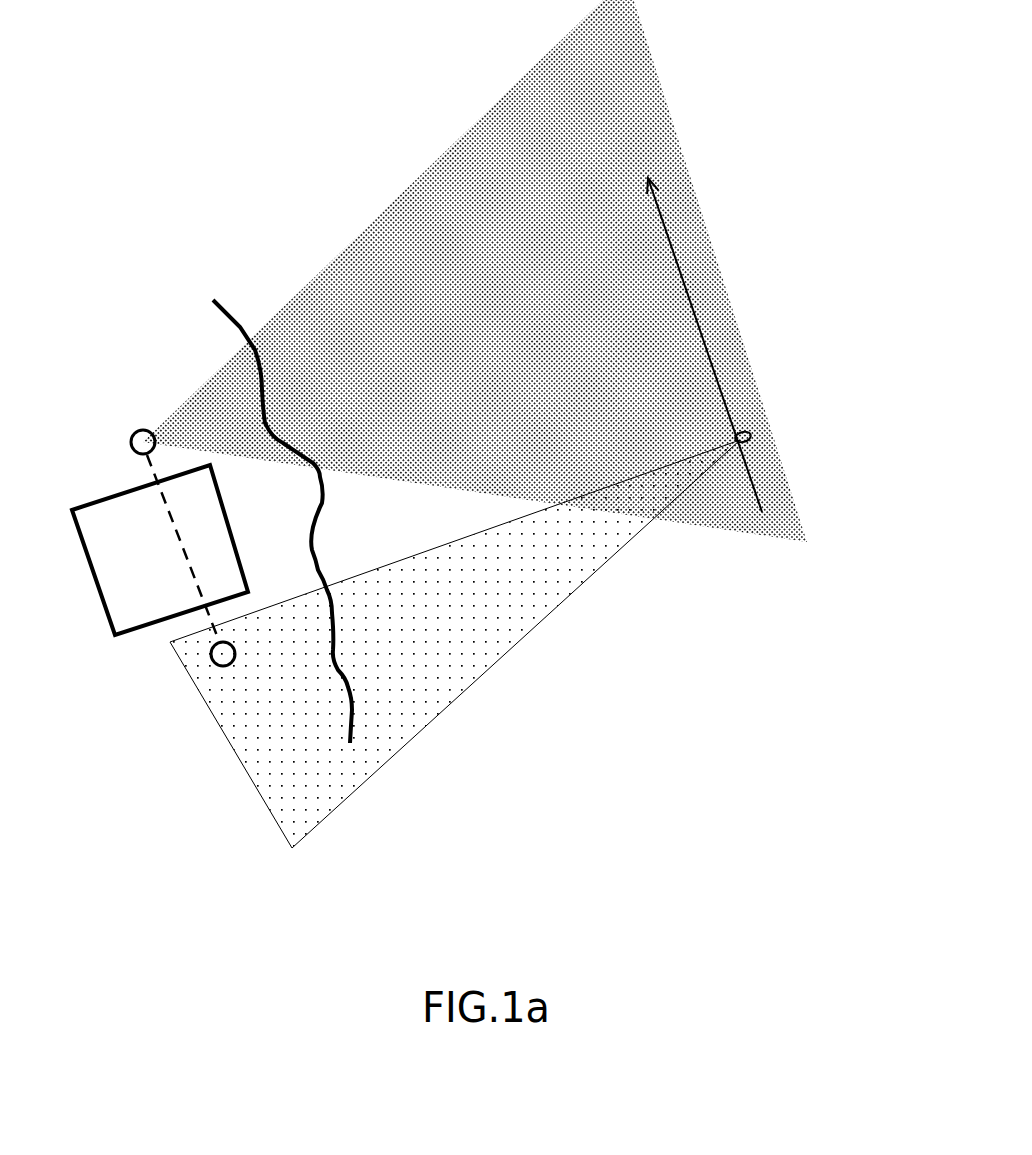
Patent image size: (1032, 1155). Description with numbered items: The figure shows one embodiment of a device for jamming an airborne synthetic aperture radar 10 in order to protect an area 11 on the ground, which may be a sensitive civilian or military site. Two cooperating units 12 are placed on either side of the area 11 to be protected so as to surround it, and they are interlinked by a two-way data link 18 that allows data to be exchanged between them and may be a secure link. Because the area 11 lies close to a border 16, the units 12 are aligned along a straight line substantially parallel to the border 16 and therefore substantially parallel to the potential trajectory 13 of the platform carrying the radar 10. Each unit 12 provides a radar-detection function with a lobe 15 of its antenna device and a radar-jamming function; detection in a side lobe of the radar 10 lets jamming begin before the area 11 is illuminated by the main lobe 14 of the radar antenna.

The airborne radar 10 is at (755, 433).
The area to be protected 11 is at (85, 552).
The cooperating unit 12 is at (130, 443).
The approach trajectory 13 is at (677, 268).
The main lobe 14 is at (512, 645).
The lobe of the antenna device 15 is at (408, 192).
The border 16 is at (233, 307).
The two-way data link 18 is at (168, 515).